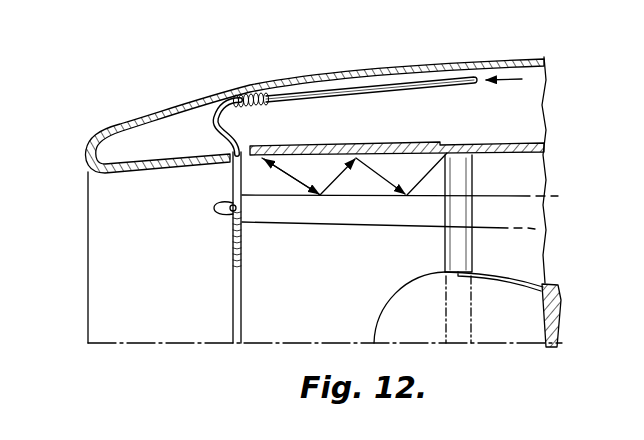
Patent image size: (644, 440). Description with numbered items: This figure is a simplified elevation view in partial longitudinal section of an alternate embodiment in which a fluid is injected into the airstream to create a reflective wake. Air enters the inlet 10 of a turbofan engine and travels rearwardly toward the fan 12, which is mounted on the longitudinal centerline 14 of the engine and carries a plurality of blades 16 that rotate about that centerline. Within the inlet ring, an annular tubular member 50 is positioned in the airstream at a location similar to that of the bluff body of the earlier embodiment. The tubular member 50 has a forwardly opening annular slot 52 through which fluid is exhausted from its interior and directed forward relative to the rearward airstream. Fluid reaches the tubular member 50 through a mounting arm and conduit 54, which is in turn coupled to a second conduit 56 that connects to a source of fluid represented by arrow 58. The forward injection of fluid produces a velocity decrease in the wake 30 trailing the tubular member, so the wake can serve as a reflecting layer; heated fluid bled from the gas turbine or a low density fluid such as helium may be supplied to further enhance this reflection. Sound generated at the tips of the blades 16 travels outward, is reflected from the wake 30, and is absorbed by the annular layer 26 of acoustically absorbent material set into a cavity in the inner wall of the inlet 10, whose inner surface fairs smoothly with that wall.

The inlet 10 is at (180, 99).
The fan 12 is at (380, 311).
The longitudinal centerline 14 is at (178, 343).
The blades 16 is at (468, 177).
The layer of acoustically absorbent material 26 is at (412, 143).
The wake 30 is at (328, 222).
The tubular member 50 is at (231, 277).
The annular slot 52 is at (214, 216).
The mounting arm and conduit 54 is at (232, 180).
The second conduit 56 is at (329, 85).
The source of fluid 58 is at (512, 73).